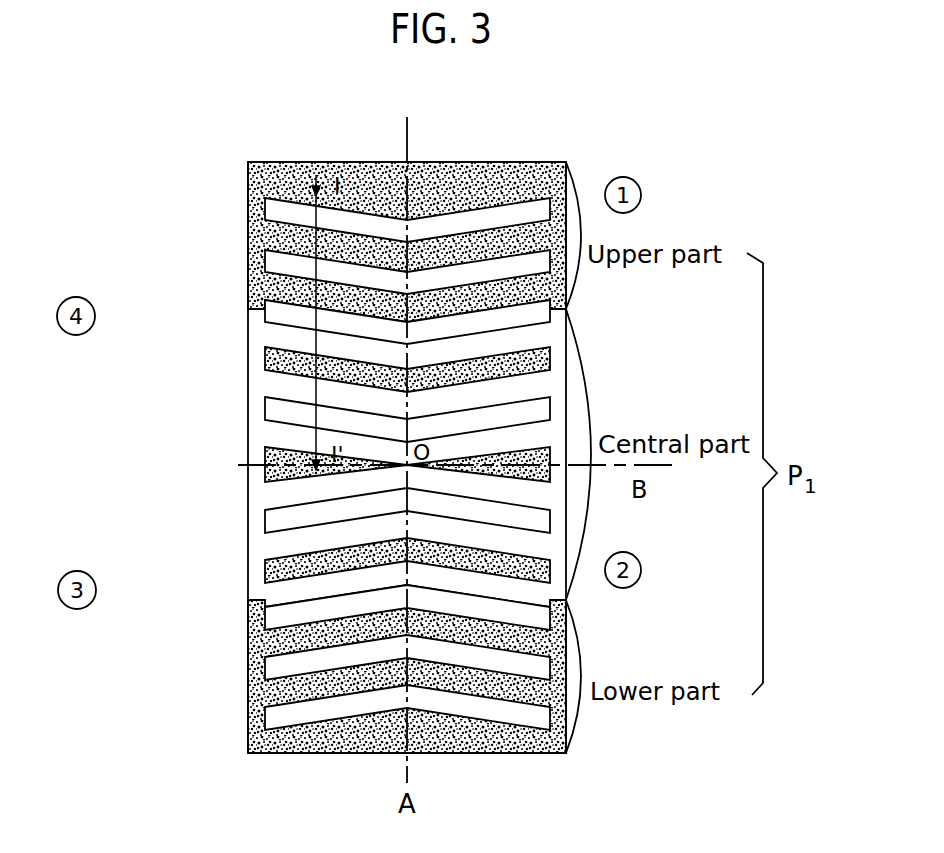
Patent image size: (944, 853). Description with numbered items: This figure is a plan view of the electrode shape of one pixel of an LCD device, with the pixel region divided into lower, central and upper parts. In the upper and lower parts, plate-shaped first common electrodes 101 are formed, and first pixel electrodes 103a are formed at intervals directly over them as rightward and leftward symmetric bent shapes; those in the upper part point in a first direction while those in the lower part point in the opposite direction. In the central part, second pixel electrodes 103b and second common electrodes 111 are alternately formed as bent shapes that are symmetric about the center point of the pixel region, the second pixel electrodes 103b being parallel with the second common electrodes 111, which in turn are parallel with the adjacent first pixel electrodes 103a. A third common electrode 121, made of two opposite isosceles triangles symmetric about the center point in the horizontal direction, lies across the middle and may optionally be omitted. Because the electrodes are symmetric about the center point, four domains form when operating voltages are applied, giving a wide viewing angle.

The first common electrode 101 is at (272, 181).
The first pixel electrode 103a is at (276, 206).
The second common electrode 111 is at (268, 355).
The second pixel electrode 103b is at (278, 412).
The third common electrode 121 is at (268, 465).